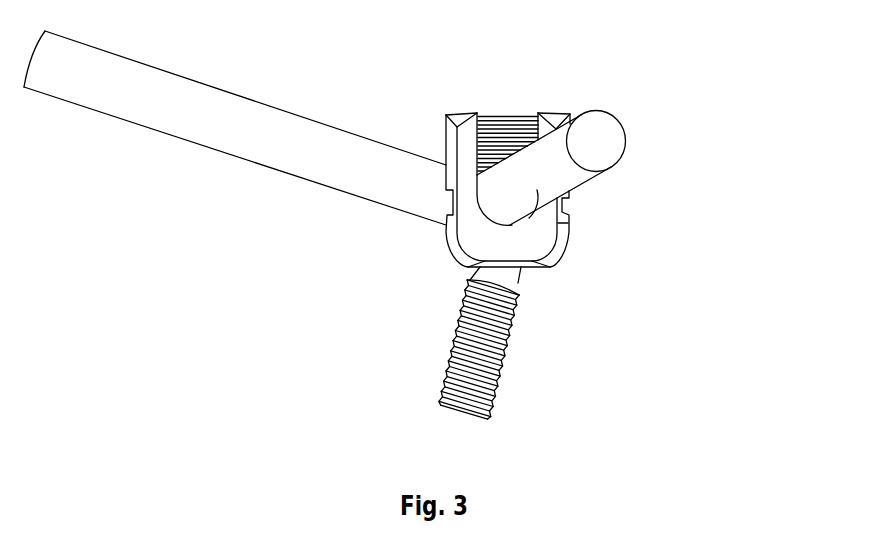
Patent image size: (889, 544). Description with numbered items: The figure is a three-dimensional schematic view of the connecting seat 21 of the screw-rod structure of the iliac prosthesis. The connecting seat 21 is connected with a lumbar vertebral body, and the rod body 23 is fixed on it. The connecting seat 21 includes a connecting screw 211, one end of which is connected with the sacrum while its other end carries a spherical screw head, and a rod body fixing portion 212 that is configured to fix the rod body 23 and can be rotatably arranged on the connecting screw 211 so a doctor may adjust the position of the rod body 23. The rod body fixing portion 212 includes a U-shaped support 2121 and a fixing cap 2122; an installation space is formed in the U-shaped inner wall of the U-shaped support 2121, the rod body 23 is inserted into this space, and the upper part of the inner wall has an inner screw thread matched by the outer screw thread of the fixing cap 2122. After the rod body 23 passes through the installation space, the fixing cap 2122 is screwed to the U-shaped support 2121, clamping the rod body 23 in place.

The connecting seat 21 is at (641, 221).
The connecting screw 211 is at (602, 353).
The rod body fixing portion 212 is at (611, 149).
The U-shaped support 2121 is at (511, 242).
The fixing cap 2122 is at (583, 93).
The rod body 23 is at (330, 165).